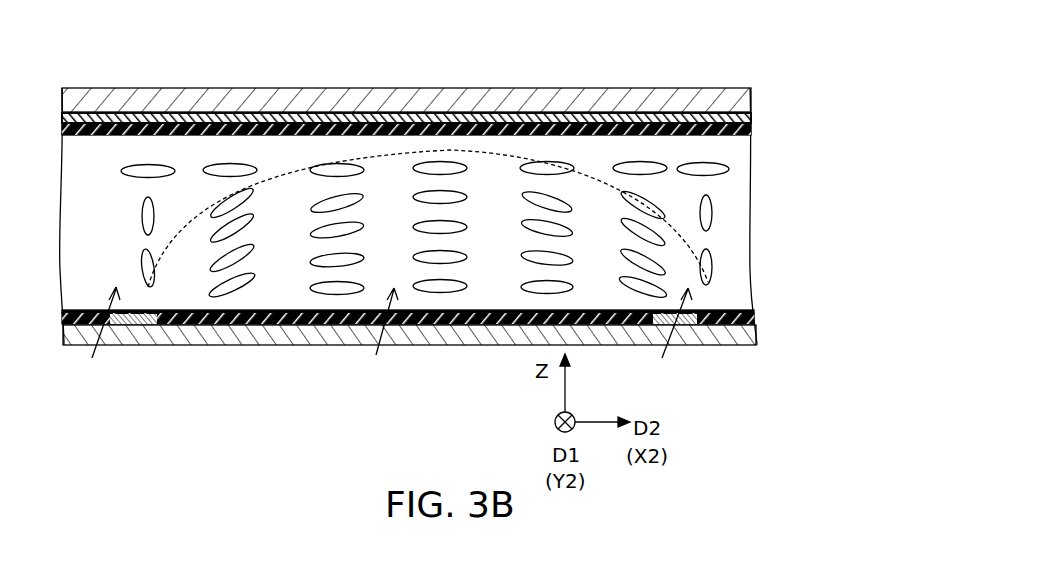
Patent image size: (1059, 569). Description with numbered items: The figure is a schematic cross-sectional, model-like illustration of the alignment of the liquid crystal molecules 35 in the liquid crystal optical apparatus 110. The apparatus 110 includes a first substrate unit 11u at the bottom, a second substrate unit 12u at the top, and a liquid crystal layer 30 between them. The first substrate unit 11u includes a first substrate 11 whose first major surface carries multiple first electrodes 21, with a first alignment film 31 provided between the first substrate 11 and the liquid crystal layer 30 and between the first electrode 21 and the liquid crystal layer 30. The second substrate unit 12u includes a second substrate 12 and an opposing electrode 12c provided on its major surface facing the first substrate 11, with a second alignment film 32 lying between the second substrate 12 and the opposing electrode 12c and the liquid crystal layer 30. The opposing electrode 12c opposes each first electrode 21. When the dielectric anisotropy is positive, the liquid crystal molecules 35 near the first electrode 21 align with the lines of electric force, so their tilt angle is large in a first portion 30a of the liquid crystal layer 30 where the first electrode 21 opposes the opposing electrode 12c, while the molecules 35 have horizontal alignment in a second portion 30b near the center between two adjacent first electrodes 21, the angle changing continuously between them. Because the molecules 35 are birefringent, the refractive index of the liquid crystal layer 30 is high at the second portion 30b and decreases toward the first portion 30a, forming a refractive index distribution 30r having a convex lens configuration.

The liquid crystal optical apparatus 110 is at (736, 69).
The second substrate 12 is at (728, 104).
The opposing electrode 12c is at (728, 117).
The second alignment film 32 is at (728, 130).
The second substrate unit 12u is at (461, 120).
The first electrode 21 is at (690, 312).
The first alignment film 31 is at (722, 319).
The first substrate 11 is at (725, 335).
The first substrate unit 11u is at (461, 320).
The liquid crystal layer 30 is at (458, 217).
The liquid crystal molecules 35 is at (713, 218).
The refractive index distribution 30r is at (288, 168).
The first portion 30a is at (382, 336).
The second portion 30b is at (373, 337).